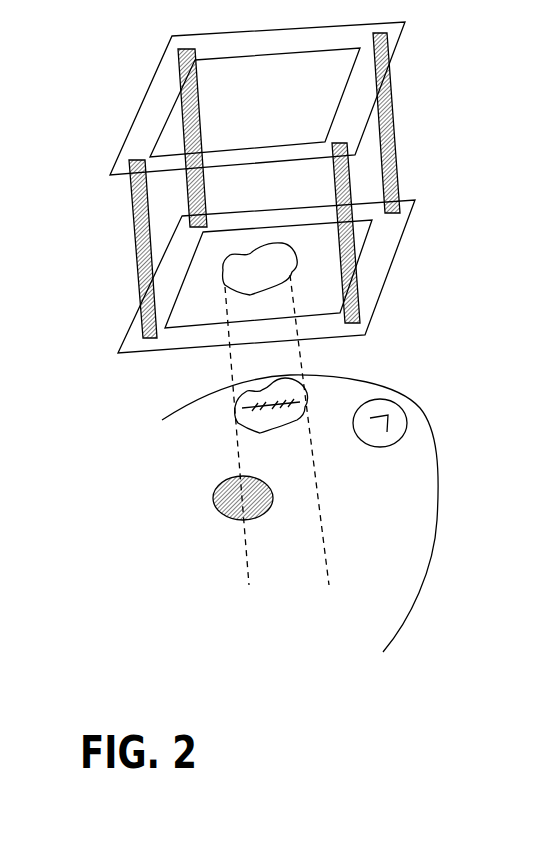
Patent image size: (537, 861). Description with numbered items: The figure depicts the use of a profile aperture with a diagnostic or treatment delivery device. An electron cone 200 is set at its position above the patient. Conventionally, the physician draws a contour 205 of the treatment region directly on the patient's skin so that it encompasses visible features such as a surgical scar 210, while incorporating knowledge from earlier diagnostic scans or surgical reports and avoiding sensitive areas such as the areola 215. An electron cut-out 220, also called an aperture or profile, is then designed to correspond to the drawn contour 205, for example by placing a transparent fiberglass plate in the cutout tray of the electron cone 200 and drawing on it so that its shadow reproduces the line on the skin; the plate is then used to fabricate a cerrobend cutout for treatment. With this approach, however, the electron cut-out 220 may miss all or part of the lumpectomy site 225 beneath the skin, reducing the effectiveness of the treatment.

The electron cone 200 is at (262, 187).
The contour 205 is at (322, 377).
The surgical scar 210 is at (257, 402).
The areola 215 is at (402, 435).
The electron cut-out 220 is at (322, 265).
The lumpectomy site 225 is at (225, 510).